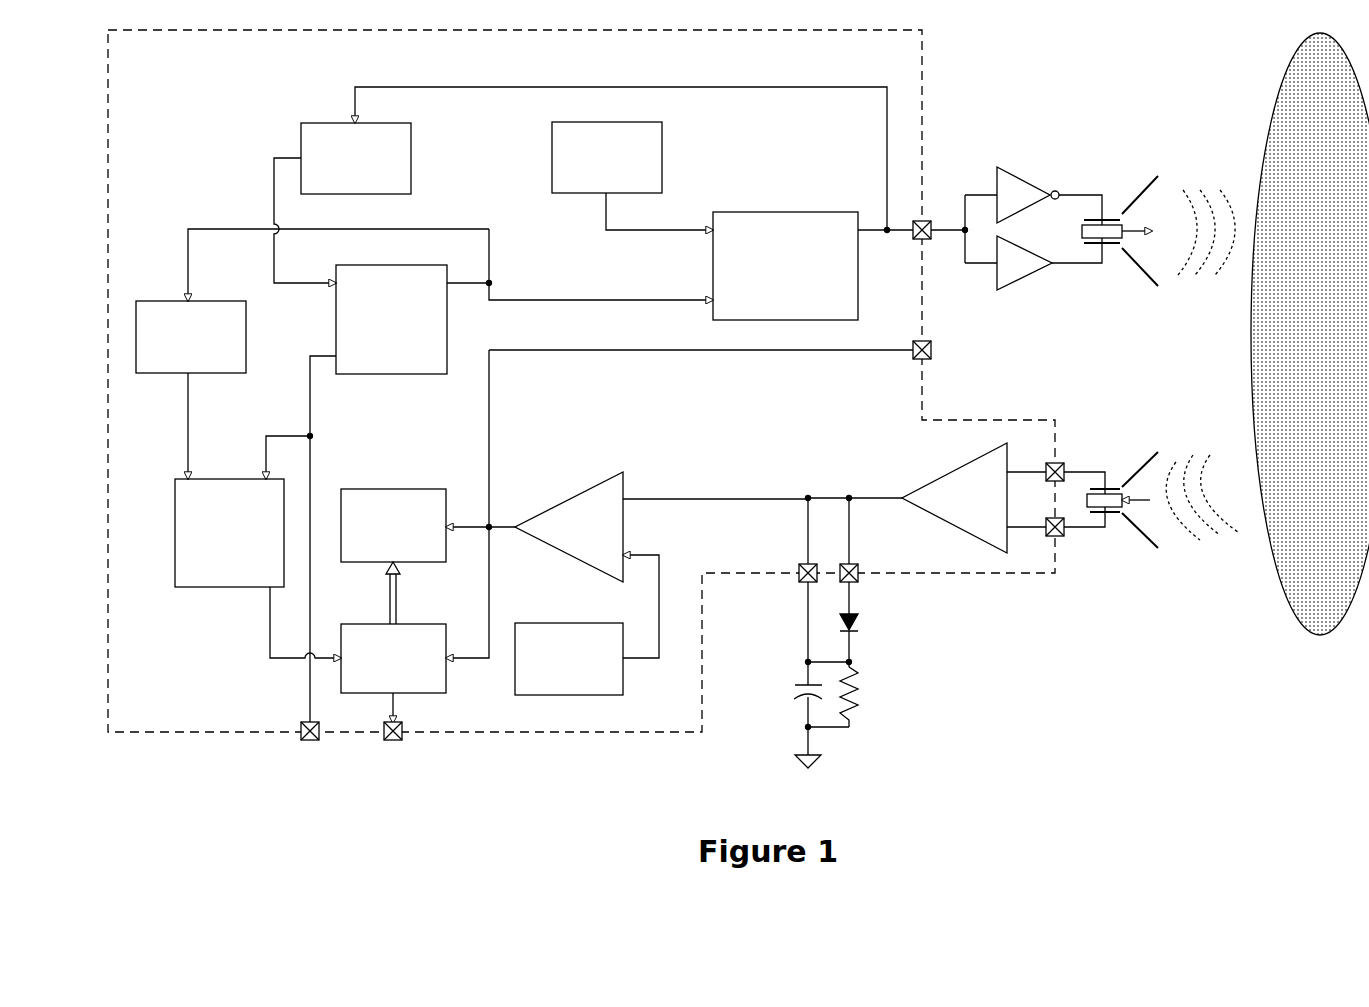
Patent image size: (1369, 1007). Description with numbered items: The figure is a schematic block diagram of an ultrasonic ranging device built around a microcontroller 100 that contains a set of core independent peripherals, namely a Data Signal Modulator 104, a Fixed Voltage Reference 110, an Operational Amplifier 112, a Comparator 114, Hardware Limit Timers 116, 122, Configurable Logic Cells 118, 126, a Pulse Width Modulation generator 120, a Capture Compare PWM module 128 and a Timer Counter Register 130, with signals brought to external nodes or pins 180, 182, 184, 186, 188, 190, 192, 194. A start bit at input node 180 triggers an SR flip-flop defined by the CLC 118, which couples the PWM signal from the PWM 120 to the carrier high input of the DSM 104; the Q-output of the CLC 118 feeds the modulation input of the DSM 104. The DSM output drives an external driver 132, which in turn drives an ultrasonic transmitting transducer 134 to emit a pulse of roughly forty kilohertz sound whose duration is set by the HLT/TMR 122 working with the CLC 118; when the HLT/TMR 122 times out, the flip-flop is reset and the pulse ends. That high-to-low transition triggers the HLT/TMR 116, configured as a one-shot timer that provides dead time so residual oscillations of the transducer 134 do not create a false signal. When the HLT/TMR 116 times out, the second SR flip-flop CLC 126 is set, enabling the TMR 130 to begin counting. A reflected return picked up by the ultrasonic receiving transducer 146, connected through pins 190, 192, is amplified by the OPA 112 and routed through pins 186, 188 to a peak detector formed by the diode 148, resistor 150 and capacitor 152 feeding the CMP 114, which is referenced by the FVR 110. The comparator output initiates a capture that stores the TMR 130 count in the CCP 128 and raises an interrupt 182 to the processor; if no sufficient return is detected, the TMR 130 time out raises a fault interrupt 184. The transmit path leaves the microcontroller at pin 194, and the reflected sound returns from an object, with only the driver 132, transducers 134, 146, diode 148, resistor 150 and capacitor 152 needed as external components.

The microcontroller 100 is at (926, 110).
The Data Signal Modulator (DSM) 104 is at (797, 212).
The Fixed Voltage Reference (FVR) 110 is at (551, 622).
The Operational Amplifier (OPA) 112 is at (940, 476).
The Comparator (CMP) 114 is at (568, 497).
The Hardware Limit Timer (HLT/TMR) 116 is at (247, 342).
The Configurable Logic Cell (CLC) 118 is at (420, 375).
The Pulse Width Modulation (PWM) Generator 120 is at (552, 160).
The Hardware Limit Timer (HLT/TMR) 122 is at (413, 167).
The Configurable Logic Cell (CLC) 126 is at (213, 588).
The Capture Compare Pulse Width Modulation (CCP) 128 is at (392, 489).
The Timer Counter Register (TMR) 130 is at (418, 624).
The external driver 132 is at (1022, 158).
The ultrasonic transmitting transducer 134 is at (1145, 198).
The ultrasonic receiving transducer 146 is at (1146, 470).
The diode 148 is at (860, 629).
The resistor 150 is at (858, 692).
The capacitor 152 is at (795, 690).
The input node 180 is at (303, 724).
The interrupt 182 is at (933, 352).
The fault interrupt 184 is at (398, 725).
The external node (pin) 186 is at (805, 580).
The external node (pin) 188 is at (860, 567).
The external node (pin) 190 is at (1064, 468).
The external node (pin) 192 is at (1065, 536).
The external node (pin) 194 is at (915, 242).